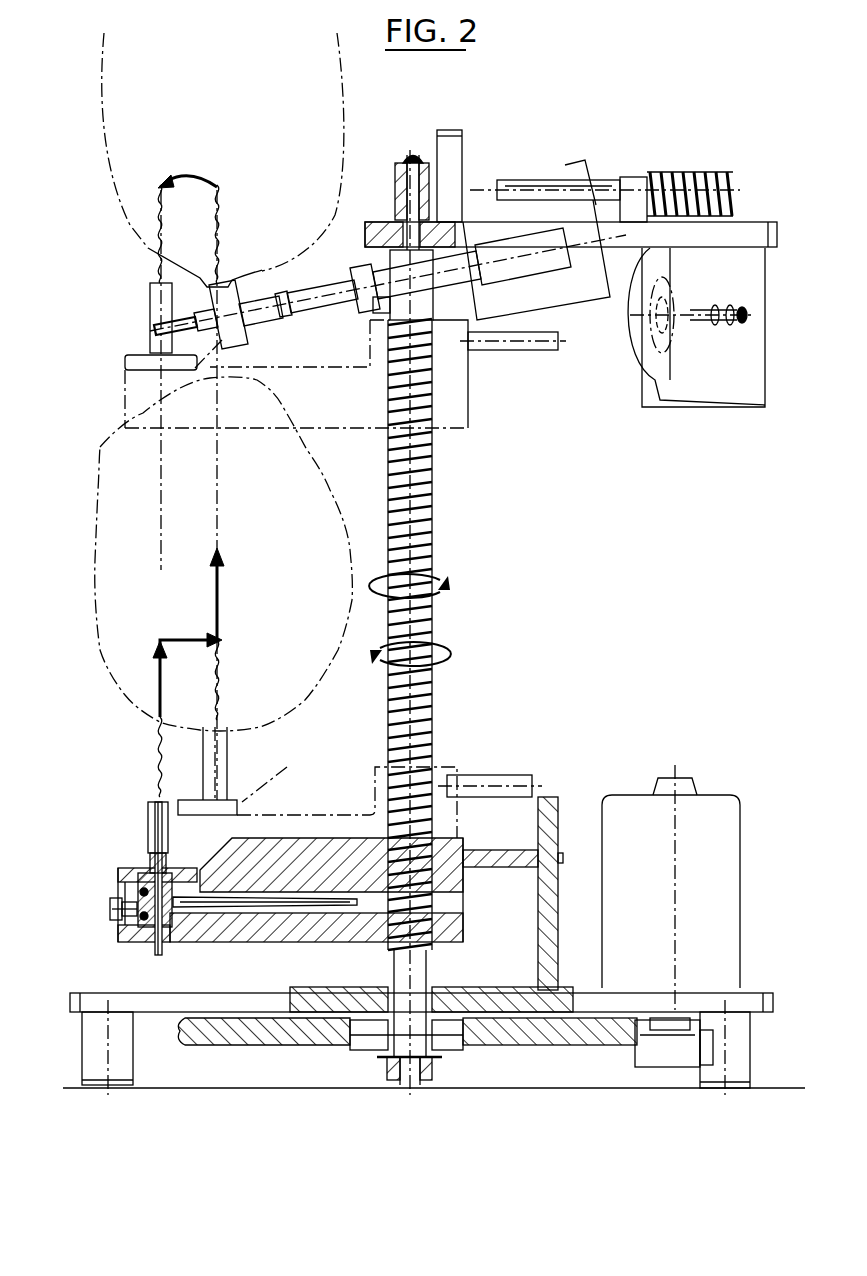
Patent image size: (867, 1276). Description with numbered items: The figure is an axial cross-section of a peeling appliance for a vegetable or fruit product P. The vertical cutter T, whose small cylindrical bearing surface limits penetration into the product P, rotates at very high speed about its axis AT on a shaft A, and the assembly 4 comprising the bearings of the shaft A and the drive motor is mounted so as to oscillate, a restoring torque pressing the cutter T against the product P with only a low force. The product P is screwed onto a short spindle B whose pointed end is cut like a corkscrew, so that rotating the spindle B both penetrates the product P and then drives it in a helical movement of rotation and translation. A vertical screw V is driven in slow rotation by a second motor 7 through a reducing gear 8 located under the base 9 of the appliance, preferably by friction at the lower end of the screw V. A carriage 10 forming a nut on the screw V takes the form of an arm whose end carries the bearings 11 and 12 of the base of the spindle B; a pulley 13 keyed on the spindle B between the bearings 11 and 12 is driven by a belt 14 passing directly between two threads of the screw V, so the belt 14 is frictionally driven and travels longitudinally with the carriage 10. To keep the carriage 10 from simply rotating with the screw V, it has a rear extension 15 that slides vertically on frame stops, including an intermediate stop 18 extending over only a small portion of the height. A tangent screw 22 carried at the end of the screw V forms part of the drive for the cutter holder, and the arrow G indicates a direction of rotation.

The product P is at (96, 547).
The vertical cutter T is at (214, 347).
The axis of the vertical cutter AT is at (298, 302).
The shaft A is at (336, 303).
The assembly 4 is at (372, 270).
The tangent screw 22 is at (400, 182).
The rotation direction G is at (494, 181).
The vertical screw V is at (428, 507).
The spindle B is at (158, 838).
The bearing 12 is at (137, 884).
The pulley 13 is at (122, 922).
The bearing 11 is at (153, 933).
The belt 14 is at (224, 904).
The carriage 10 is at (270, 925).
The base 9 is at (321, 1000).
The rear extension 15 is at (504, 858).
The intermediate stop 18 is at (547, 930).
The second motor 7 is at (708, 903).
The reducing gear 8 is at (545, 1062).